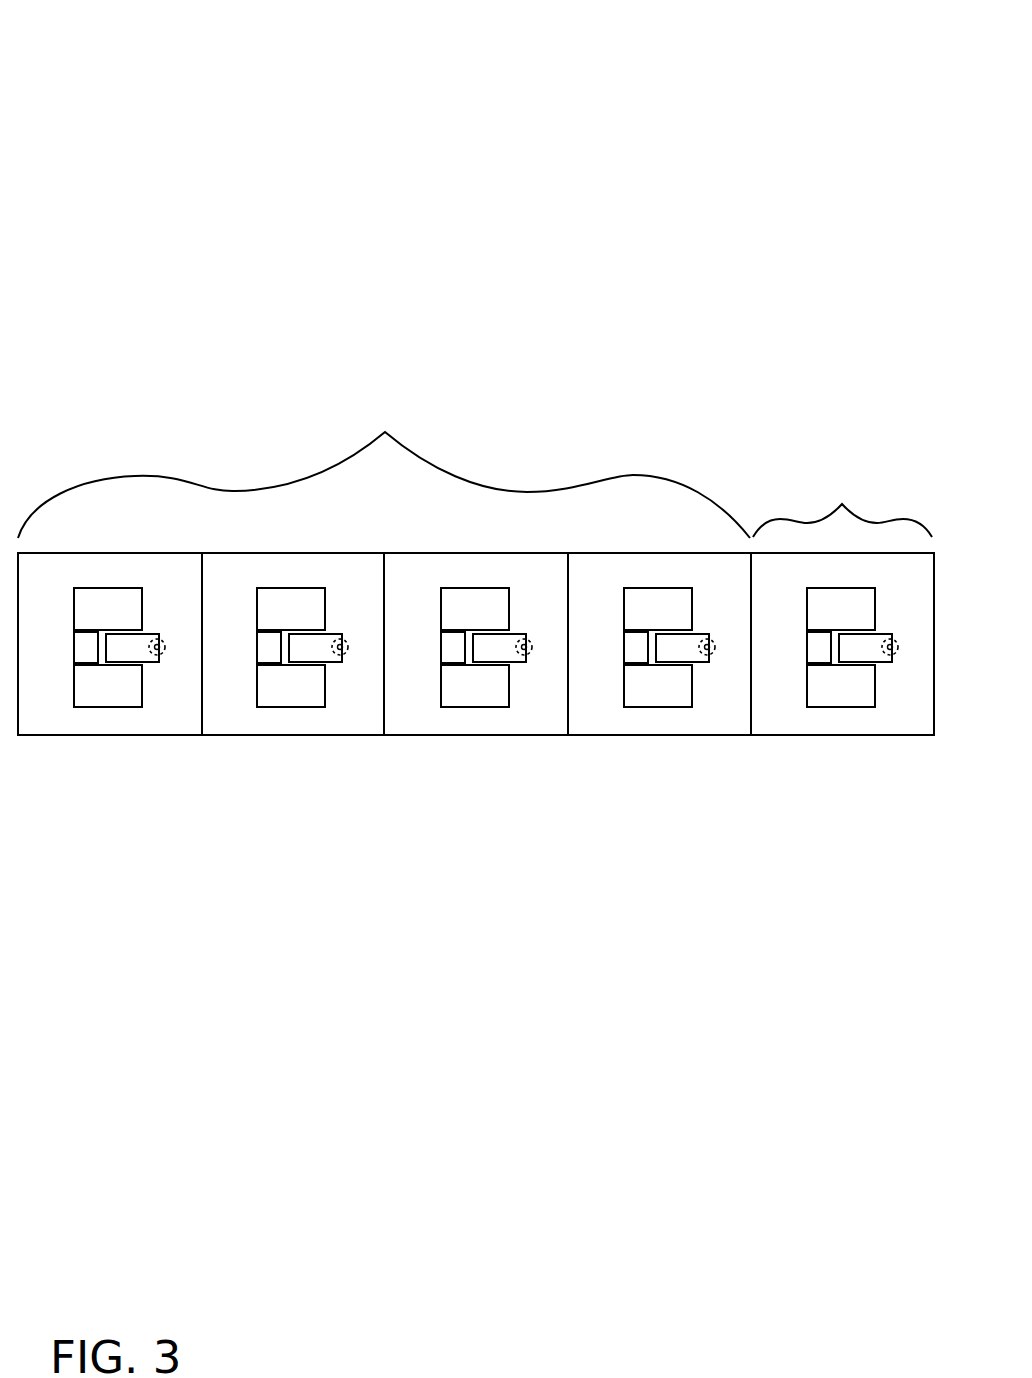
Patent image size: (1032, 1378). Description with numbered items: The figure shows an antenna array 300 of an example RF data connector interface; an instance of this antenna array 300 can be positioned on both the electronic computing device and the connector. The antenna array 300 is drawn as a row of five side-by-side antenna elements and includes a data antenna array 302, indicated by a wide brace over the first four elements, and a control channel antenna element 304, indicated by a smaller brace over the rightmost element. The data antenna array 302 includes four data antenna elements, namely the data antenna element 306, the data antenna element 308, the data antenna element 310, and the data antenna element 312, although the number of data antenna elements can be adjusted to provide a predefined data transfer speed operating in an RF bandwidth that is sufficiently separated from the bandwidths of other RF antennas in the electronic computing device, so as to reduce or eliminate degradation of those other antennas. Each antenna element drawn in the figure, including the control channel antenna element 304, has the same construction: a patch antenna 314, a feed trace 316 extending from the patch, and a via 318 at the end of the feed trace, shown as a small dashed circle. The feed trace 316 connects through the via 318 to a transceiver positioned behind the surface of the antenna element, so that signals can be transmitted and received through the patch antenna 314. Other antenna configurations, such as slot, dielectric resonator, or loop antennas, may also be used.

The antenna array 300 is at (155, 60).
The data antenna array 302 is at (370, 406).
The control channel antenna element 304 is at (828, 489).
The data antenna element 306 is at (107, 737).
The data antenna element 308 is at (282, 737).
The data antenna element 310 is at (473, 737).
The data antenna element 312 is at (648, 737).
The patch antenna 314 is at (88, 712).
The feed trace 316 is at (121, 648).
The via 318 is at (158, 640).